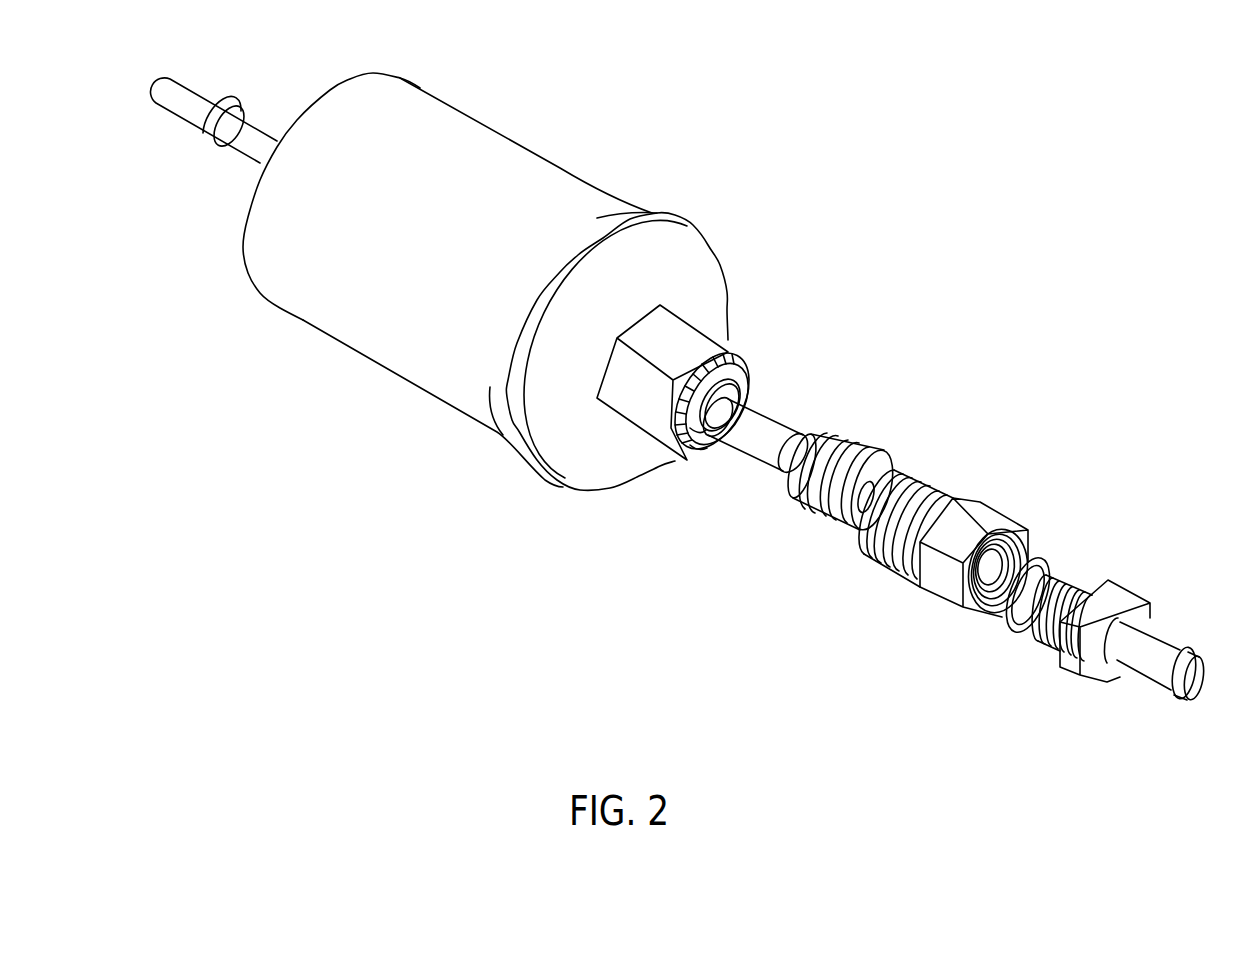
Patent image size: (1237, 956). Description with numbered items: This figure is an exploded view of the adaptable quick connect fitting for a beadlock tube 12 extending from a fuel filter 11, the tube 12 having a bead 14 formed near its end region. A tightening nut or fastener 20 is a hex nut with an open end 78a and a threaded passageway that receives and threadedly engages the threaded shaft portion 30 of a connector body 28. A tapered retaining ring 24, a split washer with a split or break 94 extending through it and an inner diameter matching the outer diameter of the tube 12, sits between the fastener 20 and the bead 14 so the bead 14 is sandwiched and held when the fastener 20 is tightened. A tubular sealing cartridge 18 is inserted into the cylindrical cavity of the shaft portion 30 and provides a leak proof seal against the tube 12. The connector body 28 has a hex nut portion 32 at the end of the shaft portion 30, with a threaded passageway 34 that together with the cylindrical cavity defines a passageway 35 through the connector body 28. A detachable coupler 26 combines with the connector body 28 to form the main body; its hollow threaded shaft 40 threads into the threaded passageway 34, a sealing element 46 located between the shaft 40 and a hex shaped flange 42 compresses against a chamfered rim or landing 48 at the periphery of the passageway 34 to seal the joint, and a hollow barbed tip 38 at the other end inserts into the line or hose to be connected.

The fuel filter 11 is at (498, 150).
The tightening nut or fastener 20 is at (683, 340).
The bead 14 is at (728, 423).
The open end 78a is at (748, 358).
The split or break 94 is at (717, 440).
The retaining ring 24 is at (703, 447).
The tube 12 is at (775, 440).
The sealing cartridge 18 is at (866, 450).
The connector body 28 is at (937, 556).
The threaded shaft portion 30 is at (872, 557).
The hex nut portion 32 is at (938, 594).
The threaded passageway 34 is at (972, 620).
The chamfered rim or landing 48 is at (988, 605).
The passageway 35 is at (1022, 570).
The detachable coupler 26 is at (1105, 646).
The sealing element 46 is at (1020, 640).
The hollow threaded shaft 40 is at (1052, 642).
The hex shaped flange 42 is at (1125, 593).
The barbed tip 38 is at (1146, 667).